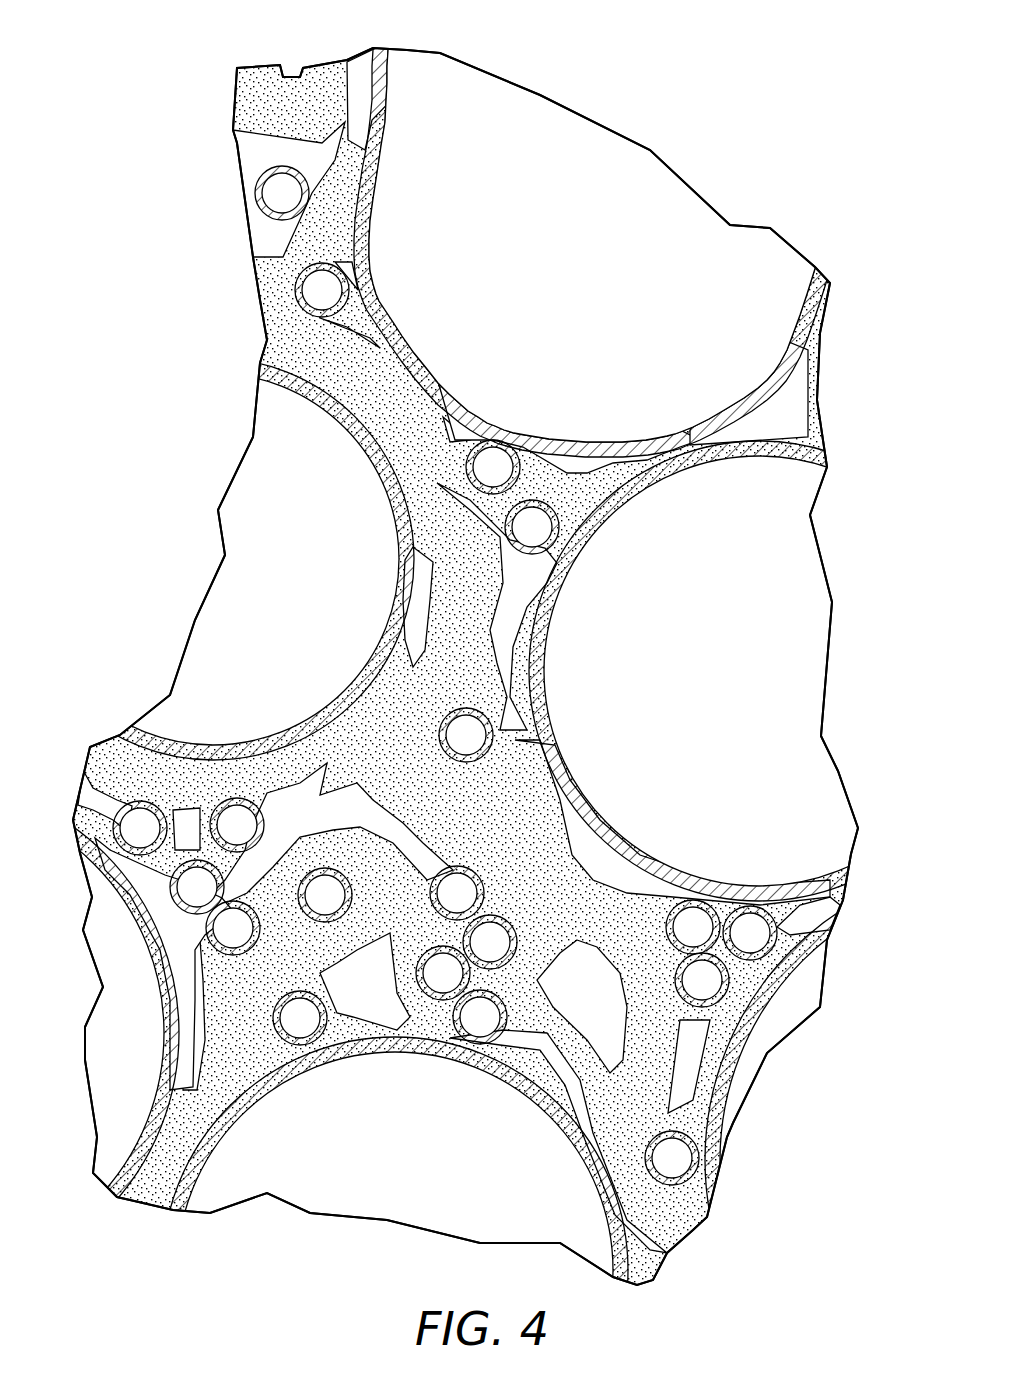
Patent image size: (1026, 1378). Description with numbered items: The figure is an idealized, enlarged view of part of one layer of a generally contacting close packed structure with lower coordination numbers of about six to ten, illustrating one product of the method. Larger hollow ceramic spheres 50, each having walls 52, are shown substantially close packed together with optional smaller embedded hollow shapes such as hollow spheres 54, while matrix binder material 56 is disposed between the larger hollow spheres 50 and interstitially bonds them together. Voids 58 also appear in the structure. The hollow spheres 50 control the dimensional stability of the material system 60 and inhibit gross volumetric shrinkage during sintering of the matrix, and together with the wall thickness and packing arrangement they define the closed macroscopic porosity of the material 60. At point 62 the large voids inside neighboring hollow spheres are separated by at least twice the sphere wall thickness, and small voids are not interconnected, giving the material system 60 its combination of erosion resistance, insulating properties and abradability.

The hollow spheres 50 is at (653, 200).
The walls 52 is at (377, 197).
The hollow spheres 54 is at (327, 290).
The matrix binder material 56 is at (312, 78).
The voids 58 is at (357, 67).
The material system 60 is at (523, 57).
The point 62 is at (407, 410).